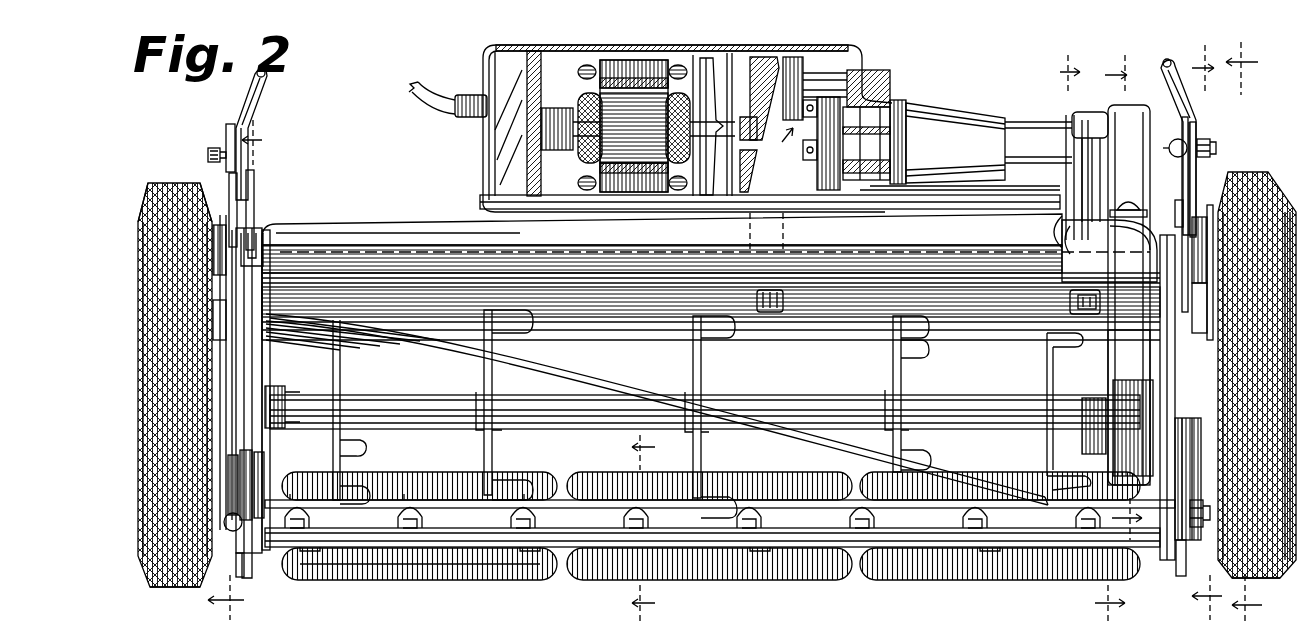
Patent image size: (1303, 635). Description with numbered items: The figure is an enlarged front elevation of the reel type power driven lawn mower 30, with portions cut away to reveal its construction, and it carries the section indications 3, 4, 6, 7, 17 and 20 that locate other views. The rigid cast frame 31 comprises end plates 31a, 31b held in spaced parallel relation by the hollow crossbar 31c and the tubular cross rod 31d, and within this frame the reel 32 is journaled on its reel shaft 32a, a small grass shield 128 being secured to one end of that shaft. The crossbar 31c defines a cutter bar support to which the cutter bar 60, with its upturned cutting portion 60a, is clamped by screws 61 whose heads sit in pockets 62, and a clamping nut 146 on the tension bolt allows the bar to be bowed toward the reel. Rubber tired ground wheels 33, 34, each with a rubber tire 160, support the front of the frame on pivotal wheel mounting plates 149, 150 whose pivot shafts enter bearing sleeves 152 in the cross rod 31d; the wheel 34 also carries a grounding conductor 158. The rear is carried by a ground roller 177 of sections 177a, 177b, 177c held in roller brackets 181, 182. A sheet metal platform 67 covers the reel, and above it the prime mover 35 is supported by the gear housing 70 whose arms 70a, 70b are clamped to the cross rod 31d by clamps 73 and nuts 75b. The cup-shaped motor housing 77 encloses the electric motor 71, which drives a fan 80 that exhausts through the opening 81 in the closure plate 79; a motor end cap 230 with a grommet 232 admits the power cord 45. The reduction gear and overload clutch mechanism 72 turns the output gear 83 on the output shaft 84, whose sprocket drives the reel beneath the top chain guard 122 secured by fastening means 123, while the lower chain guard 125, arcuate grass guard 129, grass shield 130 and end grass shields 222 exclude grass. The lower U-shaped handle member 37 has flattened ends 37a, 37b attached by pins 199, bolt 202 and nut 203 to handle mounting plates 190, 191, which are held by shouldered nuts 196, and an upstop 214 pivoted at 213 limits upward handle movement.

The ground wheel 33 is at (158, 175).
The ground wheel 34 is at (1258, 170).
The rubber tire 160 is at (170, 582).
The grounding conductor 158 is at (1288, 196).
The frame 31 is at (271, 469).
The end plate 31a is at (268, 373).
The end plate 31b is at (1178, 556).
The crossbar 31c is at (368, 507).
The cross rod 31d is at (428, 250).
The roller bracket 181 is at (236, 578).
The roller bracket 182 is at (1180, 578).
The grass shield 128 is at (284, 396).
The lower tubular U-shaped member 37 is at (274, 80).
The flattened end portion 37a is at (216, 178).
The flattened end portion 37b is at (1197, 135).
The handle mounting plate 190 is at (230, 140).
The wheel mounting plate 149 is at (232, 207).
The upstop 214 is at (250, 229).
The pivot point 213 is at (254, 241).
The platform 67 is at (365, 230).
The motor end cap 230 is at (520, 56).
The grommet 232 is at (480, 93).
The power cord 45 is at (425, 93).
The motor housing section 77 is at (565, 56).
The electric motor 71 is at (617, 58).
The prime mover 35 is at (670, 58).
The fan 80 is at (712, 56).
The gear housing closure plate and bearing support member 79 is at (726, 51).
The output drive shaft 84 is at (886, 136).
The output gear 83 is at (814, 176).
The combined reduction gear mechanism and overload clutch mechanism 72 is at (779, 147).
The exhaust opening 81 is at (731, 216).
The gear housing 70 is at (940, 116).
The arm 70a is at (790, 233).
The arm 70b is at (1066, 195).
The top chain guard 122 is at (1110, 108).
The fastening means 123 is at (1126, 207).
The clamp 73 is at (1085, 291).
The nut 75b is at (1085, 309).
The chain guard and grass shield 125 is at (1125, 339).
The arcuate grass guard 129 is at (1075, 346).
The grass shield 130 is at (1083, 437).
The grass shield 222 is at (1192, 454).
The bearing sleeve 152 is at (1190, 266).
The shouldered nut 196 is at (1190, 326).
The clamping nut 146 is at (1197, 528).
The wheel mounting plate 150 is at (1208, 211).
The bolt 202 is at (1178, 139).
The nut 203 is at (1210, 150).
The handle mounting plate 191 is at (1182, 181).
The pin 199 is at (1180, 203).
The reel 32 is at (595, 379).
The reel shaft 32a is at (790, 396).
The lawn mower 30 is at (800, 608).
The screw 61 is at (423, 518).
The pocket 62 is at (401, 508).
The cutter bar 60 is at (713, 583).
The upturned portion 60a is at (928, 541).
The ground roller 177 is at (370, 584).
The ground roller section 177a is at (476, 584).
The ground roller section 177b is at (621, 584).
The ground roller section 177c is at (979, 584).
The section line 20 is at (247, 369).
The section line 17 is at (651, 530).
The section line 6 is at (1086, 339).
The section line 7 is at (1129, 297).
The section line 3 is at (1204, 332).
The section line 4 is at (1244, 333).